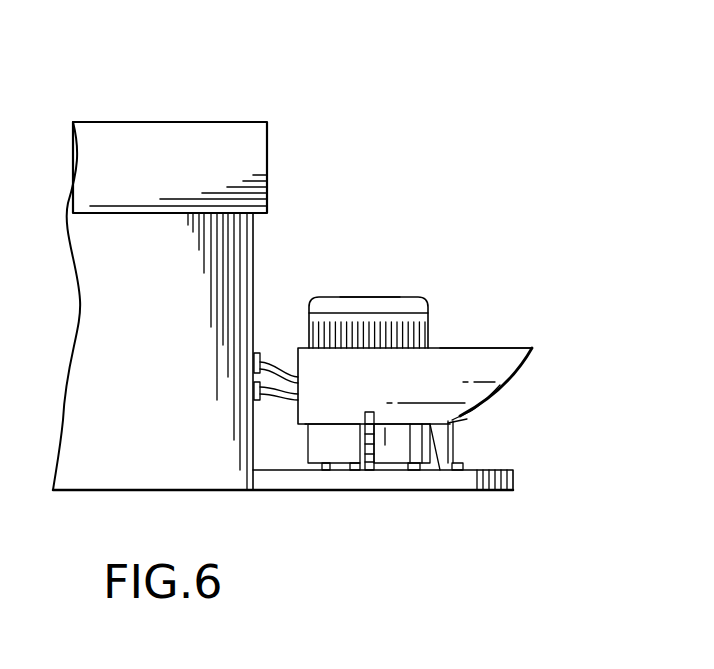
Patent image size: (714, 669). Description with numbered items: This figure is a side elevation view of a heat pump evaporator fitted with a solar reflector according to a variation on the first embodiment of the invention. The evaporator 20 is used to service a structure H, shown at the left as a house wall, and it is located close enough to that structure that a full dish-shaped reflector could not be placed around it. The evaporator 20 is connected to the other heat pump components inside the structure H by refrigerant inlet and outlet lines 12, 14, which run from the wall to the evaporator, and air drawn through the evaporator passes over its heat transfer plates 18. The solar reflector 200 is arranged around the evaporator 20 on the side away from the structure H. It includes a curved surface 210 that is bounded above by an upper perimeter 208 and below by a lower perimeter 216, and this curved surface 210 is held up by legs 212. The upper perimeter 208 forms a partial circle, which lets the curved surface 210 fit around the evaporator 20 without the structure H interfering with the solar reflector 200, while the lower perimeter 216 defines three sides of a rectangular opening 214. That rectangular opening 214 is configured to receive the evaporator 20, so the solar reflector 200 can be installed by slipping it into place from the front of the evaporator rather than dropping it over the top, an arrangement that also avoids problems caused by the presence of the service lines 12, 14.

The structure H is at (138, 122).
The refrigerant inlet line 12 is at (276, 362).
The refrigerant outlet line 14 is at (280, 403).
The heat transfer plates 18 is at (428, 338).
The evaporator 20 is at (352, 296).
The solar reflector 200 is at (518, 347).
The upper perimeter 208 is at (477, 348).
The curved surface 210 is at (505, 377).
The legs 212 is at (452, 440).
The rectangular opening 214 is at (438, 423).
The lower perimeter 216 is at (340, 425).